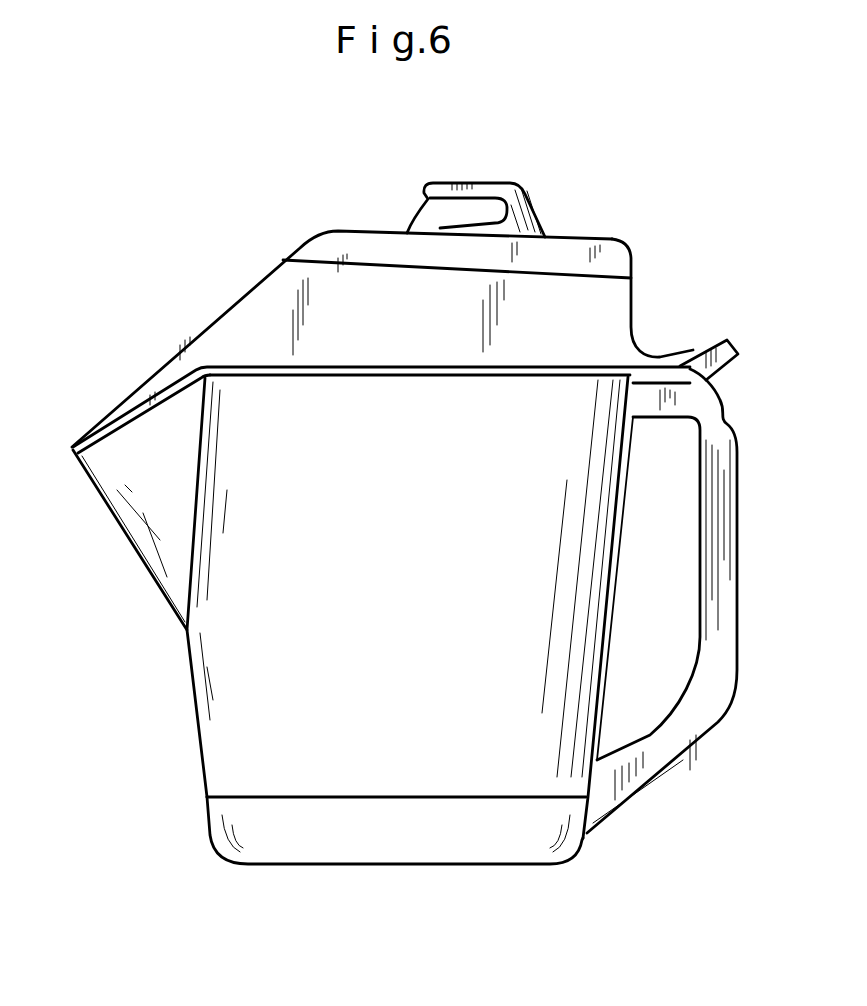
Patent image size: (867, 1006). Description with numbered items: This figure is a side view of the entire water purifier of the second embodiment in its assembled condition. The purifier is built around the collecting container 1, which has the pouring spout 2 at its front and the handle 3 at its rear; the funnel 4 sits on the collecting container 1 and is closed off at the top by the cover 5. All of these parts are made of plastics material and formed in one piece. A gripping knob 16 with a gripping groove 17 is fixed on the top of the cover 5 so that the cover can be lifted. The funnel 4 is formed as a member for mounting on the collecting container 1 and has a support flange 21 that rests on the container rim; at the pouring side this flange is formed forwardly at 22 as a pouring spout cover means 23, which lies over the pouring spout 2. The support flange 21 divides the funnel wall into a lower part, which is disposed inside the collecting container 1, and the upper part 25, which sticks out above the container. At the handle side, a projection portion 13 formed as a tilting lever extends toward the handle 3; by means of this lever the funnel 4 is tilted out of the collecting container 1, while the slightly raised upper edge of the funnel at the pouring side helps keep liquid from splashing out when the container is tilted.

The collecting container 1 is at (210, 695).
The pouring spout 2 is at (100, 487).
The handle 3 is at (710, 582).
The funnel 4 is at (230, 303).
The cover 5 is at (609, 250).
The projection portion 13 is at (717, 341).
The gripping knob 16 is at (514, 192).
The gripping groove 17 is at (440, 213).
The support flange 21 is at (508, 366).
The forward formation of the support flange 22 is at (110, 420).
The pouring spout cover means 23 is at (135, 402).
The upper part of the funnel wall 25 is at (359, 331).